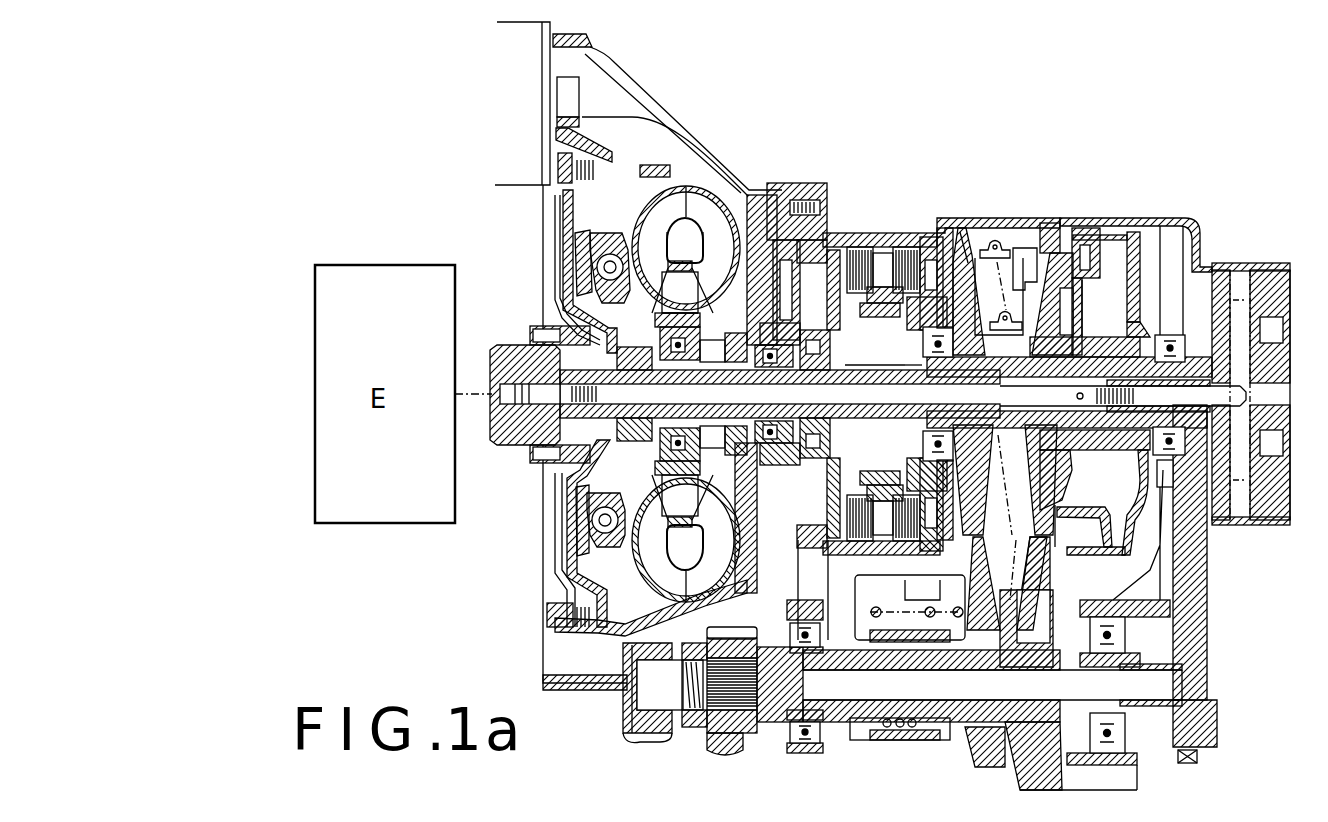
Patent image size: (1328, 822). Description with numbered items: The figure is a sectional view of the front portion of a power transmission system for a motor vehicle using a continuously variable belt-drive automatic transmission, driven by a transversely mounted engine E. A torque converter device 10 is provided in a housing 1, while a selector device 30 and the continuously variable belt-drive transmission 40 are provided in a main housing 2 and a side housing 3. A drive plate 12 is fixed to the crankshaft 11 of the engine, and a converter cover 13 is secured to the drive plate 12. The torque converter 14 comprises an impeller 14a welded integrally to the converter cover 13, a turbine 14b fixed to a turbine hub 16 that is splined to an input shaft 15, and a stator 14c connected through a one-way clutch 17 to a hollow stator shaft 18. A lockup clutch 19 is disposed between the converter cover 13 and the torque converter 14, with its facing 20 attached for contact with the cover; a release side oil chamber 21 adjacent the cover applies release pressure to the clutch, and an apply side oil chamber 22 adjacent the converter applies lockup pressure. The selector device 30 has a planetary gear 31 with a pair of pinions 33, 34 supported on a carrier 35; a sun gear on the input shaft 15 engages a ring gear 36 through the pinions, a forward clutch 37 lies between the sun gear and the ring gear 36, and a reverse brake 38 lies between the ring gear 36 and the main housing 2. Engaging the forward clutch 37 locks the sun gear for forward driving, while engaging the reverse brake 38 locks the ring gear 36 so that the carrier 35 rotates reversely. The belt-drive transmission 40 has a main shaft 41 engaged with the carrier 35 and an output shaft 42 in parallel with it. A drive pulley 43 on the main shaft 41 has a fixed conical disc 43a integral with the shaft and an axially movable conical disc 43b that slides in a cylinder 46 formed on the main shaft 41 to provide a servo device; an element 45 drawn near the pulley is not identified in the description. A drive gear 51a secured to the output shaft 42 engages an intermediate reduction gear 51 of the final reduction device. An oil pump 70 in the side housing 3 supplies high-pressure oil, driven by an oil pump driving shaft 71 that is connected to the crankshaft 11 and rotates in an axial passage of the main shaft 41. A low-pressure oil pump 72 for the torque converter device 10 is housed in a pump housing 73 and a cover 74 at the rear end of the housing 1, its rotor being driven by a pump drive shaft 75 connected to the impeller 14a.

The housing 1 is at (676, 121).
The main housing 2 is at (995, 219).
The side housing 3 is at (1186, 222).
The torque converter device 10 is at (623, 134).
The crankshaft 11 is at (521, 432).
The drive plate 12 is at (562, 540).
The converter cover 13 is at (580, 255).
The torque converter 14 is at (712, 188).
The impeller 14a is at (715, 251).
The turbine 14b is at (649, 251).
The stator 14c is at (680, 296).
The input shaft 15 is at (658, 372).
The turbine hub 16 is at (630, 372).
The one-way clutch 17 is at (694, 372).
The hollow stator shaft 18 is at (781, 372).
The lockup clutch 19 is at (582, 221).
The facing 20 is at (611, 185).
The release side oil chamber 21 is at (582, 282).
The apply side oil chamber 22 is at (648, 183).
The selector device 30 is at (914, 190).
The planetary gear 31 is at (878, 280).
The pinion 33 is at (855, 370).
The pinion 34 is at (894, 372).
The carrier 35 is at (963, 372).
The ring gear 36 is at (880, 520).
The forward clutch 37 is at (855, 265).
The reverse brake 38 is at (920, 292).
The continuously variable belt-drive transmission 40 is at (1168, 269).
The main shaft 41 is at (1003, 433).
The output shaft 42 is at (738, 637).
The drive pulley 43 is at (1013, 241).
The fixed conical disc 43a is at (968, 228).
The axially movable conical disc 43b is at (1046, 270).
The synchronizer key 45 is at (1004, 318).
The cylinder 46 is at (1092, 325).
The intermediate reduction gear 51 is at (733, 732).
The drive gear 51a is at (733, 634).
The oil pump 70 is at (1286, 388).
The oil pump driving shaft 71 is at (1045, 388).
The oil pump 72 is at (787, 372).
The pump housing 73 is at (778, 232).
The cover 74 is at (834, 240).
The pump drive shaft 75 is at (706, 372).